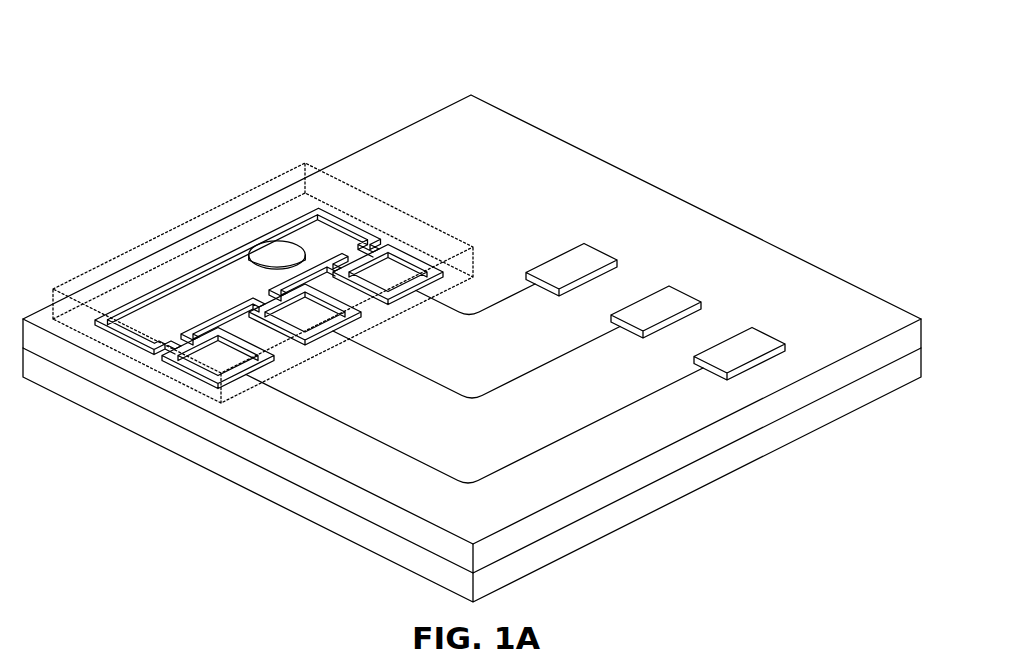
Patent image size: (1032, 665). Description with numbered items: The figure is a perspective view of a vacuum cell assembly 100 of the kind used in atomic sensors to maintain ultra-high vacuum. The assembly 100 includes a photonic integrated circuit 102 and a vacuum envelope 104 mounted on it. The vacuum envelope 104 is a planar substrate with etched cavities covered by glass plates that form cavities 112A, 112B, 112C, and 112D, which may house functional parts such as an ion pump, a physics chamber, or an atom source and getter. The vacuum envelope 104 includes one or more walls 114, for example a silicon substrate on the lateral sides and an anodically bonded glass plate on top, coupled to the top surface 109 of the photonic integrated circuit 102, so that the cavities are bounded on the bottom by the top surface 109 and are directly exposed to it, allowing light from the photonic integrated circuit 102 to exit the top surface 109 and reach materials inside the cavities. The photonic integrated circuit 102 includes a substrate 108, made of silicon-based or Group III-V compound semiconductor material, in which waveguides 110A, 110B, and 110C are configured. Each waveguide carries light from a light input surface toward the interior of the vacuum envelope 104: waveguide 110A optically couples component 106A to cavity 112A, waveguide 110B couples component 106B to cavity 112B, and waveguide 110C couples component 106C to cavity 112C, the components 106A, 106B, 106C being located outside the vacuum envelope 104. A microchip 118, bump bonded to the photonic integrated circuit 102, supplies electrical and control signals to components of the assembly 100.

The vacuum cell assembly 100 is at (286, 48).
The photonic integrated circuit 102 is at (710, 158).
The vacuum envelope 104 is at (246, 158).
The component 106A is at (586, 254).
The component 106B is at (670, 297).
The component 106C is at (753, 338).
The substrate 108 is at (386, 136).
The top surface 109 is at (473, 103).
The waveguide 110A is at (511, 299).
The waveguide 110B is at (548, 363).
The waveguide 110C is at (548, 448).
The cavity 112A is at (410, 285).
The cavity 112B is at (325, 326).
The cavity 112C is at (240, 366).
The cavity 112D is at (197, 321).
The walls 114 is at (165, 232).
The microchip 118 is at (697, 482).